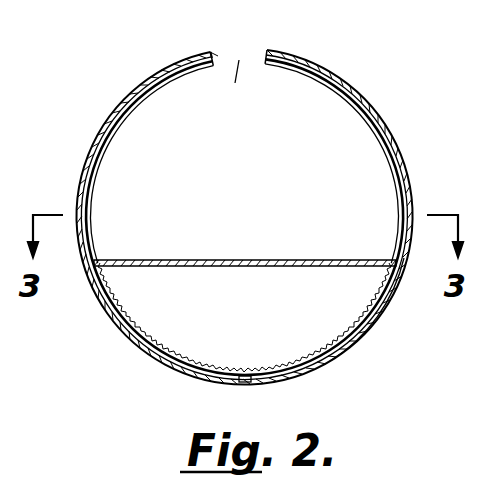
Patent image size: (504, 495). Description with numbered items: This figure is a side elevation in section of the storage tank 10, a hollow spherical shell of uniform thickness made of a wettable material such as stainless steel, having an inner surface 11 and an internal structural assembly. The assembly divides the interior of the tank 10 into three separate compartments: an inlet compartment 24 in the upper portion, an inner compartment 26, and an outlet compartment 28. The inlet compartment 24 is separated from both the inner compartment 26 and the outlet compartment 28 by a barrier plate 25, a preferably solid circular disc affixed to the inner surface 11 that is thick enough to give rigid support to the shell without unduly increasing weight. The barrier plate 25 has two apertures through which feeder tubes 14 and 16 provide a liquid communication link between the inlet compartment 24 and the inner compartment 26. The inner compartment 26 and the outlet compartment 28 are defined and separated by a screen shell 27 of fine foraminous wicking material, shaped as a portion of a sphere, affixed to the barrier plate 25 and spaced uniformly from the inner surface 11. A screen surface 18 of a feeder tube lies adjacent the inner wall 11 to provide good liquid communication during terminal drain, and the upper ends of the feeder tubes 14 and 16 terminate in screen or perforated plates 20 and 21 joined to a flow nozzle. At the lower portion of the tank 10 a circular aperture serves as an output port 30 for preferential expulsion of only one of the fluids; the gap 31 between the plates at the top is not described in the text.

The storage tank 10 is at (410, 166).
The inner surface 11 is at (168, 355).
The feeder tube 14 is at (103, 172).
The feeder tube 16 is at (390, 171).
The screen surface 18 is at (110, 117).
The screen or perforated plate 20 is at (213, 58).
The screen or perforated plate 21 is at (265, 62).
The inlet compartment 24 is at (256, 200).
The barrier plate 25 is at (170, 268).
The inner compartment 26 is at (318, 327).
The screen shell 27 is at (320, 371).
The outlet compartment 28 is at (371, 330).
The output port 30 is at (245, 384).
The gap 31 is at (237, 92).